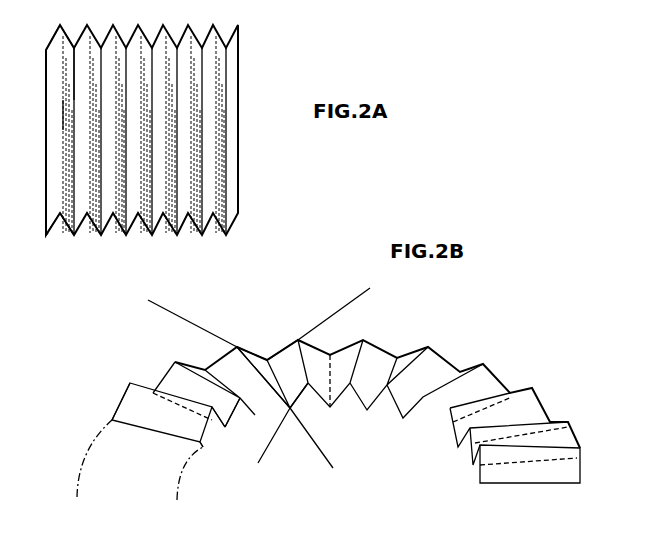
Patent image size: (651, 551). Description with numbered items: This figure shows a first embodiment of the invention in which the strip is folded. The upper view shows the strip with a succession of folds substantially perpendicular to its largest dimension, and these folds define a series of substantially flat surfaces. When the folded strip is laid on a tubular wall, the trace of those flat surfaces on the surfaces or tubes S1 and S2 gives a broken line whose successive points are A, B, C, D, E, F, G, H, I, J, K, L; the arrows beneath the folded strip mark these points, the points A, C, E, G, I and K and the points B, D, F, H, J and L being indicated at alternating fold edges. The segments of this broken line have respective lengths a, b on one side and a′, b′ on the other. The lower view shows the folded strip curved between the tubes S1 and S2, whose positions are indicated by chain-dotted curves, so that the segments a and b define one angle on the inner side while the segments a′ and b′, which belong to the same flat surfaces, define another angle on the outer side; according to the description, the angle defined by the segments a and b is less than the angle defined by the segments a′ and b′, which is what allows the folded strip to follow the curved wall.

In FIG. 2A, the broken line segment a′ is at (48, 36).
In FIG. 2B, the broken line segment a′ is at (247, 343).
In FIG. 2A, the broken line segment b′ is at (67, 35).
In FIG. 2B, the broken line segment b′ is at (283, 343).
In FIG. 2A, the broken line segment b is at (63, 215).
In FIG. 2B, the broken line segment b is at (305, 398).
In FIG. 2A, the broken line segment a is at (56, 226).
In FIG. 2B, the broken line segment a is at (282, 405).
In FIG. 2A, the broken line point A is at (47, 240).
In FIG. 2B, the broken line point A is at (203, 447).
In FIG. 2A, the broken line point B is at (61, 224).
In FIG. 2B, the broken line point B is at (215, 422).
In FIG. 2A, the broken line point C is at (75, 240).
In FIG. 2B, the broken line point C is at (228, 433).
In FIG. 2A, the broken line point D is at (88, 224).
In FIG. 2A, the broken line point E is at (102, 240).
In FIG. 2A, the broken line point F is at (114, 224).
In FIG. 2A, the broken line point G is at (127, 240).
In FIG. 2A, the broken line point H is at (140, 224).
In FIG. 2A, the broken line point I is at (153, 240).
In FIG. 2A, the broken line point J is at (164, 224).
In FIG. 2A, the broken line point K is at (178, 240).
In FIG. 2A, the broken line point L is at (190, 224).
In FIG. 2B, the surface or tube S1 is at (191, 485).
In FIG. 2B, the surface or tube S2 is at (104, 455).